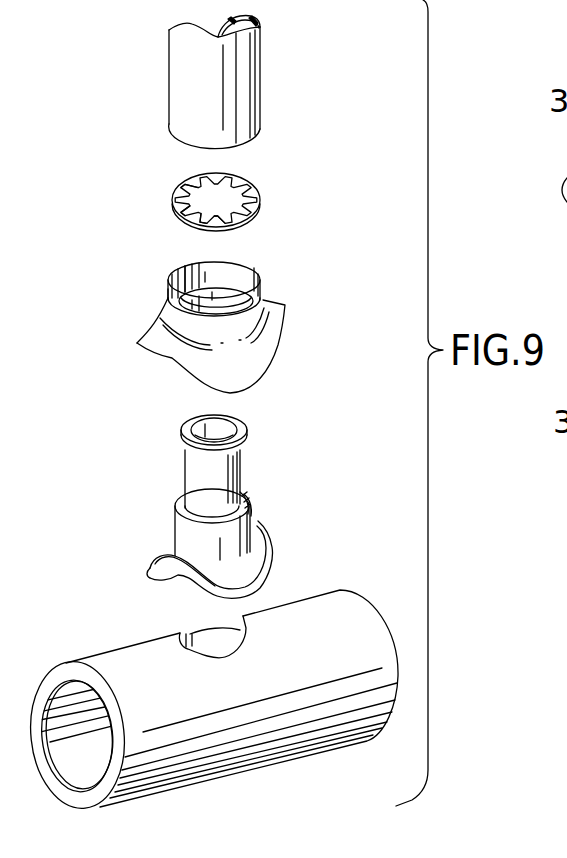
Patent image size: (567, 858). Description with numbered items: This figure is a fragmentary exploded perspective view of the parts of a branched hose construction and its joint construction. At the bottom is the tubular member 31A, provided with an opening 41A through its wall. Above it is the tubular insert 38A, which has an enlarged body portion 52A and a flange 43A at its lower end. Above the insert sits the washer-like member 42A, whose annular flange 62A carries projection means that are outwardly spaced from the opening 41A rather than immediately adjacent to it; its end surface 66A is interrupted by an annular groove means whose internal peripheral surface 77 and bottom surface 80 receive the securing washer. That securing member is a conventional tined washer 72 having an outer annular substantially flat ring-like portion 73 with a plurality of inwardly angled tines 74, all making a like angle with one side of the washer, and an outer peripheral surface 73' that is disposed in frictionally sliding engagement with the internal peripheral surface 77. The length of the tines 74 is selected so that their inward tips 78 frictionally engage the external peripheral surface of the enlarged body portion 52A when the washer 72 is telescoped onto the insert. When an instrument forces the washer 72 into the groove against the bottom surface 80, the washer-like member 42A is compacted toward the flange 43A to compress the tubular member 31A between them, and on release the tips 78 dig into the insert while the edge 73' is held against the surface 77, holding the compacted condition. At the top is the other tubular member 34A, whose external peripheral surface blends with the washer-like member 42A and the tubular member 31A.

The tubular member 34A is at (260, 77).
The tined washer 72 is at (262, 201).
The ring-like portion 73 is at (154, 180).
The tines 74 is at (187, 212).
The outer peripheral surface 73' is at (170, 239).
The inward tips 78 is at (215, 222).
The end surface 66A is at (237, 268).
The washer-like member 42A is at (267, 300).
The internal peripheral surface 77 is at (197, 273).
The bottom surface 80 is at (170, 300).
The annular flange 62A is at (257, 353).
The tubular insert 38A is at (180, 532).
The enlarged body portion 52A is at (252, 515).
The flange 43A is at (247, 563).
The tubular member 31A is at (92, 652).
The opening 41A is at (208, 659).